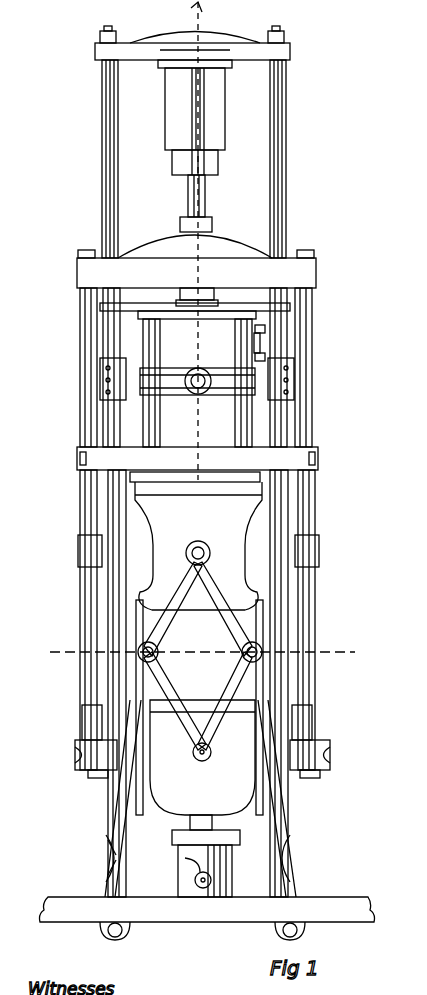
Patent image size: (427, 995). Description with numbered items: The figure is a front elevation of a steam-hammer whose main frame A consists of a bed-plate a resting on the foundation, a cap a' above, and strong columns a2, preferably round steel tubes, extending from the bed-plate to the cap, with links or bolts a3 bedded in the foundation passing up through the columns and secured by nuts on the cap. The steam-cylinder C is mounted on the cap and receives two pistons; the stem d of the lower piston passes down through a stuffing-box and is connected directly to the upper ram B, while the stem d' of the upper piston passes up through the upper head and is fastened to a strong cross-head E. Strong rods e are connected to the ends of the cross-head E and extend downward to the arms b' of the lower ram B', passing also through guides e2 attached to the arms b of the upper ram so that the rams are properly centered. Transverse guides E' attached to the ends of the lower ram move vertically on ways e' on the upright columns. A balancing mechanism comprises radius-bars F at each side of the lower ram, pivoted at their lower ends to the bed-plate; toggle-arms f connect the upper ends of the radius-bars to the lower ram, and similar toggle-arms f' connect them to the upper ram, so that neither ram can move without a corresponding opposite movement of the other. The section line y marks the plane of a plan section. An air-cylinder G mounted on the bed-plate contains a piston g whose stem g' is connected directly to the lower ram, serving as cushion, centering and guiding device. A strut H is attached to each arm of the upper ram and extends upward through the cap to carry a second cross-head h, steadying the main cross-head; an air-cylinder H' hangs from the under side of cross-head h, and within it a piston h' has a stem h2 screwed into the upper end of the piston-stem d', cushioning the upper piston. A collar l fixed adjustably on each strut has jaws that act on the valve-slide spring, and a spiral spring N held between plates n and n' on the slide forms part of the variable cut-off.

The strut H is at (197, 448).
The second cross-head h is at (204, 43).
The air-cylinder H' is at (200, 105).
The piston h' is at (207, 162).
The stem h2 is at (203, 203).
The cross-head E is at (196, 261).
The rods e is at (203, 242).
The stem of upper piston d' is at (207, 281).
The steam-cylinder C is at (195, 375).
The collar l is at (294, 380).
The plate n is at (296, 320).
The spiral spring N is at (260, 342).
The plate n' is at (297, 363).
The cap a' is at (197, 458).
The stem of lower piston d is at (241, 486).
The upper ram B is at (198, 546).
The arms of upper ram b is at (275, 566).
The guides e2 is at (319, 552).
The toggle-arms f' is at (198, 609).
The toggle-arms f is at (198, 701).
The section line y is at (200, 652).
The radius-bars F is at (136, 700).
The lower ram B' is at (202, 757).
The ways e' is at (218, 721).
The transverse guides E' is at (217, 767).
The arms of lower ram b' is at (213, 756).
The columns a2 is at (290, 830).
The links or bolts a3 is at (110, 860).
The main frame A is at (320, 847).
The air-cylinder G is at (194, 863).
The stem g' is at (222, 820).
The piston g is at (178, 874).
The bed-plate a is at (207, 910).